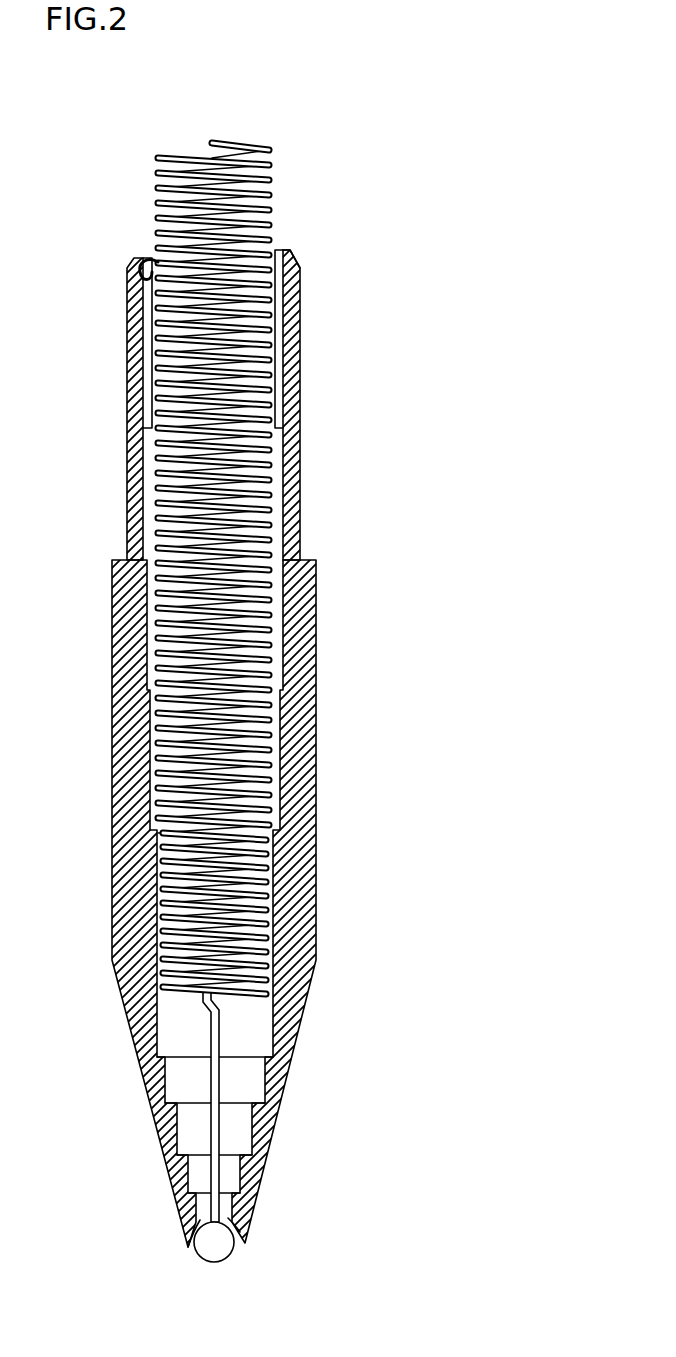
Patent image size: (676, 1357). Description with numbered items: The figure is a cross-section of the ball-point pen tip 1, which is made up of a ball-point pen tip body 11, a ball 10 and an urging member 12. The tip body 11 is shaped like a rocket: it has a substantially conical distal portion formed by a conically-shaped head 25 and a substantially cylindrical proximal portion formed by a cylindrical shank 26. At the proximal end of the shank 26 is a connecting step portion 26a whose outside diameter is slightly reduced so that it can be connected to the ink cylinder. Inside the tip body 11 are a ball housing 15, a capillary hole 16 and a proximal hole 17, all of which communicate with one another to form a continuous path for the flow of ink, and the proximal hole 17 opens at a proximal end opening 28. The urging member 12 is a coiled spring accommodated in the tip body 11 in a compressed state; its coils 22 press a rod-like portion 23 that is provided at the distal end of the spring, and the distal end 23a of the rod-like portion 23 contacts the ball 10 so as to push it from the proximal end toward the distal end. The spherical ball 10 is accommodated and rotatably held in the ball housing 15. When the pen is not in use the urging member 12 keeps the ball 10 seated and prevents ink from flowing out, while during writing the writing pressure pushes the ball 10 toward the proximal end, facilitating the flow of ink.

The ball-point pen tip 1 is at (382, 228).
The ball 10 is at (215, 1265).
The ball-point pen tip body 11 is at (316, 612).
The urging member 12 is at (236, 134).
The ball housing 15 is at (237, 1250).
The capillary hole 16 is at (195, 1212).
The proximal hole 17 is at (143, 268).
The spring coil portion 22 is at (272, 760).
The rod-like portion 23 is at (268, 360).
The distal end of the rod-like portion 23a is at (248, 1222).
The conically-shaped head 25 is at (290, 1068).
The cylindrical shank 26 is at (316, 905).
The connecting step portion 26a is at (302, 462).
The proximal end opening 28 is at (283, 250).